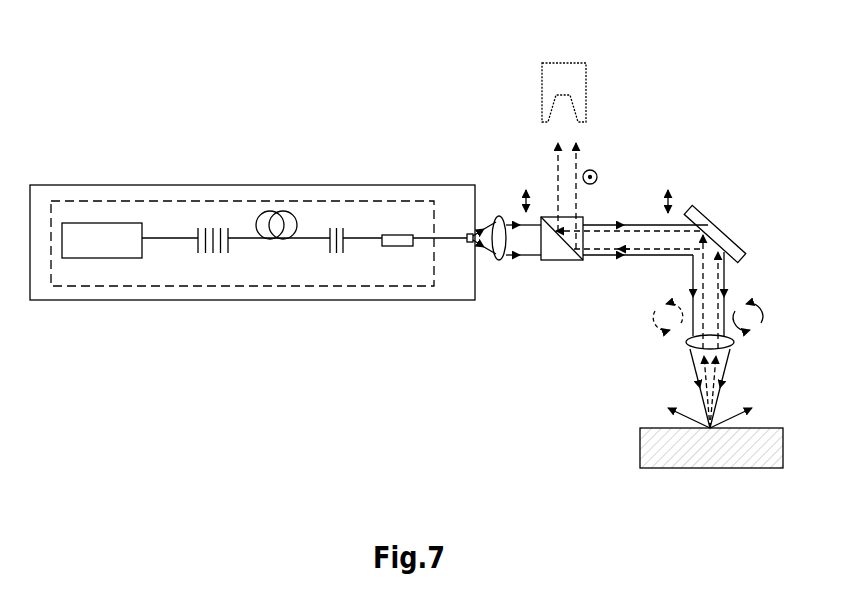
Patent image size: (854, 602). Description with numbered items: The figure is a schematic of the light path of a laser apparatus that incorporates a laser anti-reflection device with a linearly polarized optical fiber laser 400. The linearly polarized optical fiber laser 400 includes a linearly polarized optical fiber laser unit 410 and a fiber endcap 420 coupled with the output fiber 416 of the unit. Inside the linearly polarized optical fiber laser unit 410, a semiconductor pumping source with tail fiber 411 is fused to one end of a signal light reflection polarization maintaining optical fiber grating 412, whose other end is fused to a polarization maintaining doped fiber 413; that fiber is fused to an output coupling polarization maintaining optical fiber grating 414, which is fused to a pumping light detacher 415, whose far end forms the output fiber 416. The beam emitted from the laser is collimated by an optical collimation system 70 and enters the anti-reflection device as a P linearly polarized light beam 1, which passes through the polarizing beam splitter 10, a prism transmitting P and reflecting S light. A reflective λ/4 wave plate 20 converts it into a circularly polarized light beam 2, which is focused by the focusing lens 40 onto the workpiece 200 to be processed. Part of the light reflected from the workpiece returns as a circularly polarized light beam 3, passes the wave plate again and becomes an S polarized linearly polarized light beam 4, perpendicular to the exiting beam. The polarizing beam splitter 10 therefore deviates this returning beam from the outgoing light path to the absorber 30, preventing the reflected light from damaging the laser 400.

The linearly polarized optical fiber laser 400 is at (262, 185).
The linearly polarized optical fiber laser unit 410 is at (188, 200).
The semiconductor pumping source with tail fiber 411 is at (101, 257).
The signal light reflection polarization maintaining optical fiber grating 412 is at (212, 260).
The polarization maintaining doped fiber 413 is at (275, 243).
The output coupling polarization maintaining optical fiber grating 414 is at (336, 258).
The pumping light detacher 415 is at (400, 248).
The output fiber 416 is at (454, 242).
The fiber endcap 420 is at (470, 233).
The optical collimation system 70 is at (498, 218).
The linearly polarized light beam 1 is at (533, 257).
The polarizing beam splitter 10 is at (565, 262).
The absorber 30 is at (561, 75).
The linearly polarized light beam 4 is at (604, 229).
The λ/4 wave plate 20 is at (712, 227).
The circularly polarized light beam 3 is at (700, 282).
The circularly polarized light beam 2 is at (722, 282).
The focusing lens 40 is at (728, 340).
The workpiece 200 is at (708, 462).